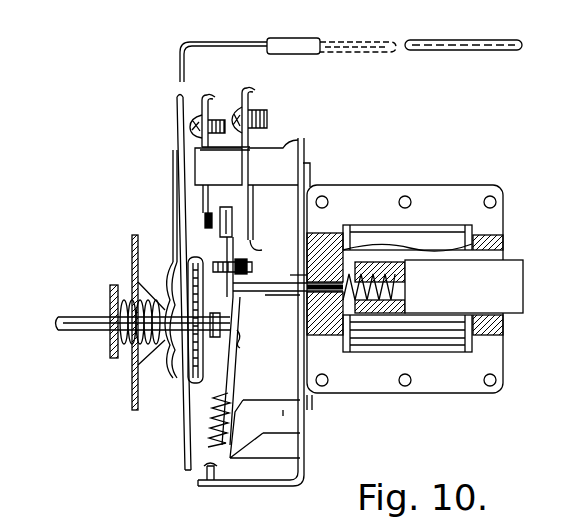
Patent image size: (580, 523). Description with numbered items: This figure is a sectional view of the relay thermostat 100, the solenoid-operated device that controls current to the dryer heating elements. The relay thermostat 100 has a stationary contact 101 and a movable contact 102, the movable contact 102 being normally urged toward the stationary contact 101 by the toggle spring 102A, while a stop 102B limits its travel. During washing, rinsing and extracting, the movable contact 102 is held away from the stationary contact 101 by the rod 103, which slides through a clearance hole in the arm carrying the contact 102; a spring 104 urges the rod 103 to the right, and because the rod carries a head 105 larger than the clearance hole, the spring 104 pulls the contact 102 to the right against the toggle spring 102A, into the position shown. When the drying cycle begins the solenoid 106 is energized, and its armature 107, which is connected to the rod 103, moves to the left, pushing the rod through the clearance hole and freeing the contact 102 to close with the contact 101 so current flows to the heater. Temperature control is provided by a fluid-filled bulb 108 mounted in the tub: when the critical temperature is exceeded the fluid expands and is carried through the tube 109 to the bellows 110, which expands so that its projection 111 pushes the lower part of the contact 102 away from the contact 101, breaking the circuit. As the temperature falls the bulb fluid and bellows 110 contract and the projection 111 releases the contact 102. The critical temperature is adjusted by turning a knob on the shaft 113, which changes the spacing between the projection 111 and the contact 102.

The relay thermostat 100 is at (238, 484).
The stationary contact 101 is at (207, 220).
The movable contact 102 is at (223, 232).
The toggle spring 102A is at (215, 418).
The stop 102B is at (272, 251).
The rod 103 is at (297, 345).
The spring 104 is at (392, 278).
The head 105 is at (230, 305).
The solenoid 106 is at (472, 342).
The armature 107 is at (508, 292).
The bulb 108 is at (457, 52).
The tube 109 is at (205, 42).
The bellows 110 is at (183, 400).
The projection 111 is at (240, 340).
The shaft 113 is at (85, 317).